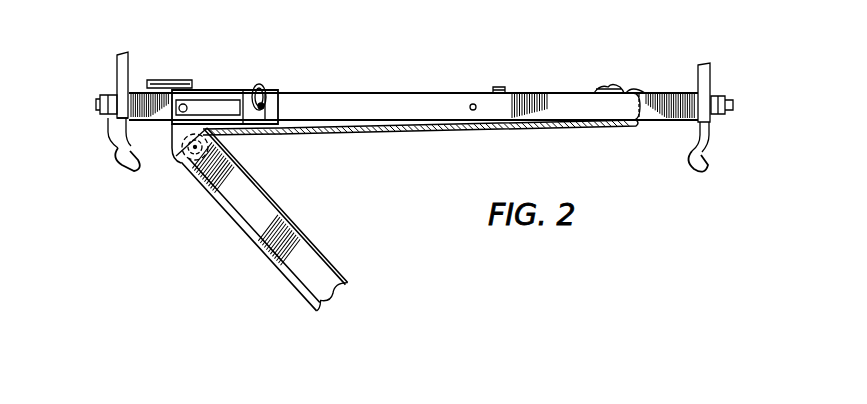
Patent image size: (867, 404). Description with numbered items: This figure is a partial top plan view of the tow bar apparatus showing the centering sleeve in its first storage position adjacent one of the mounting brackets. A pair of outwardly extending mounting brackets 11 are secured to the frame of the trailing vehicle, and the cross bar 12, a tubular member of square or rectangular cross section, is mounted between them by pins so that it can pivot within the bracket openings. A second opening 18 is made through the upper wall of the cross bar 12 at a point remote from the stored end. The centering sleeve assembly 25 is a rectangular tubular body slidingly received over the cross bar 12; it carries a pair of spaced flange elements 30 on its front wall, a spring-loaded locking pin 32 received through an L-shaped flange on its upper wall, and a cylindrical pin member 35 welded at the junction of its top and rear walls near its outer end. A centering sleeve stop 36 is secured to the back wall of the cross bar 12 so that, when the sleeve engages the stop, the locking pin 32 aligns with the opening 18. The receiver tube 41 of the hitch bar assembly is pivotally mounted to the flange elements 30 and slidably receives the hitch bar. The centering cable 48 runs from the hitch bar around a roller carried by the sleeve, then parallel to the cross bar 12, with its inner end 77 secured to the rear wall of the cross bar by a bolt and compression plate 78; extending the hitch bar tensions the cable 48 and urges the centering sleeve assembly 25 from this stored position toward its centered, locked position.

The mounting bracket 11 is at (120, 73).
The cross bar 12 is at (349, 92).
The second opening 18 is at (473, 104).
The centering sleeve assembly 25 is at (224, 88).
The spaced flange elements 30 is at (173, 138).
The spring-loaded locking pin 32 is at (258, 104).
The cylindrical pin member 35 is at (158, 84).
The centering sleeve stop 36 is at (504, 87).
The receiver tube 41 is at (282, 283).
The centering cable 48 is at (380, 131).
The inner end of the cable 77 is at (632, 91).
The bolt and compression plate 78 is at (606, 87).